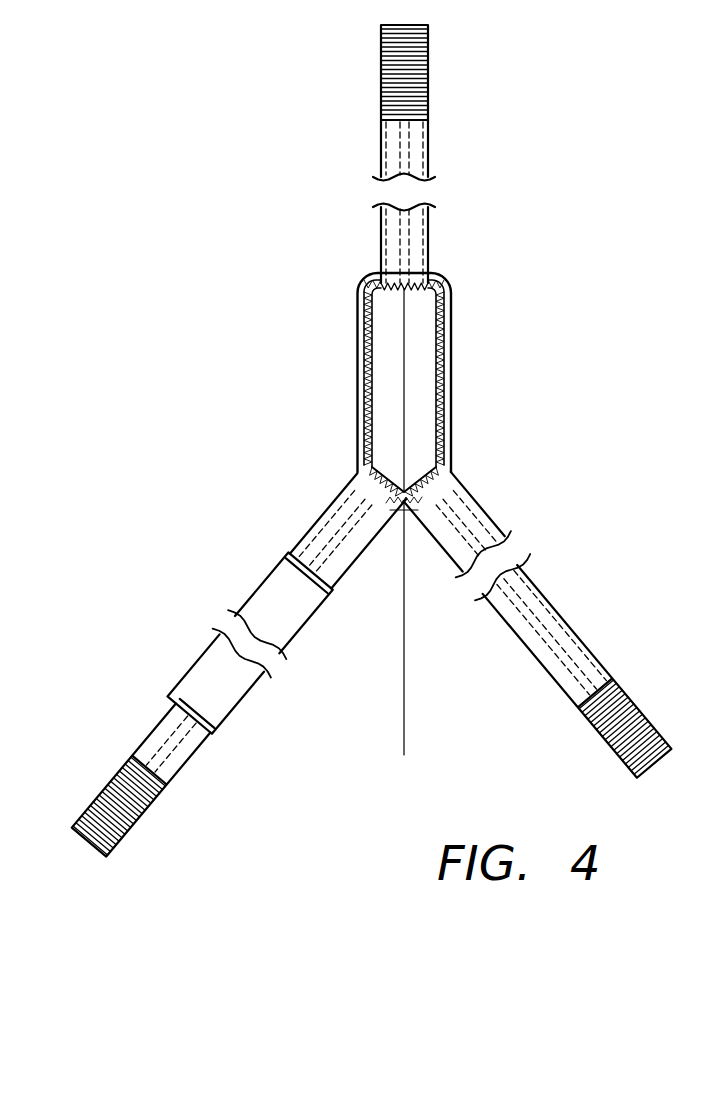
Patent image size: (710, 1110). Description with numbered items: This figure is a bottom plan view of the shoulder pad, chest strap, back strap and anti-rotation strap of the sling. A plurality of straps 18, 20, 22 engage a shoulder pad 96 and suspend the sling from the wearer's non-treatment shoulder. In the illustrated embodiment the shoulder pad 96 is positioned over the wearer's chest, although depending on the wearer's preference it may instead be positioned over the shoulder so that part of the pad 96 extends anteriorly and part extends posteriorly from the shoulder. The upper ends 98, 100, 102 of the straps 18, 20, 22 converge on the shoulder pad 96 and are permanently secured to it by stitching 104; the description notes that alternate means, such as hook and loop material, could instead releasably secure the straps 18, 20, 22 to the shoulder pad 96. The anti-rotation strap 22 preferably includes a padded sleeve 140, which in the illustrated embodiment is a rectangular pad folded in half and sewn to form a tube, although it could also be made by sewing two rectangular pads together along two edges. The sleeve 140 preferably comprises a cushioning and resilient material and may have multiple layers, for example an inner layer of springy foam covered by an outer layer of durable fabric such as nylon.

The strap 18 is at (573, 650).
The strap 20 is at (418, 220).
The anti-rotation strap 22 is at (157, 737).
The shoulder pad 96 is at (452, 328).
The upper end of strap 98 is at (393, 238).
The upper end of strap 100 is at (477, 527).
The upper end of strap 102 is at (320, 517).
The stitching 104 is at (424, 265).
The padded sleeve 140 is at (217, 685).